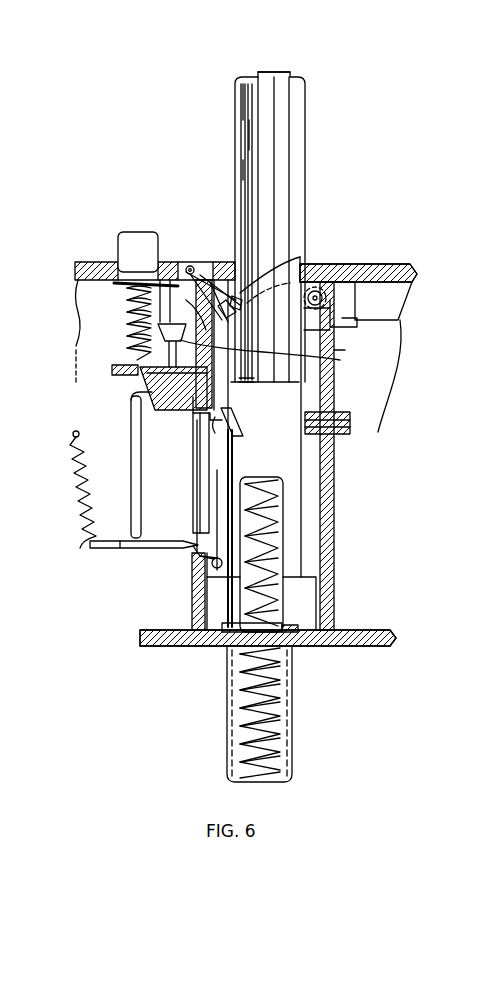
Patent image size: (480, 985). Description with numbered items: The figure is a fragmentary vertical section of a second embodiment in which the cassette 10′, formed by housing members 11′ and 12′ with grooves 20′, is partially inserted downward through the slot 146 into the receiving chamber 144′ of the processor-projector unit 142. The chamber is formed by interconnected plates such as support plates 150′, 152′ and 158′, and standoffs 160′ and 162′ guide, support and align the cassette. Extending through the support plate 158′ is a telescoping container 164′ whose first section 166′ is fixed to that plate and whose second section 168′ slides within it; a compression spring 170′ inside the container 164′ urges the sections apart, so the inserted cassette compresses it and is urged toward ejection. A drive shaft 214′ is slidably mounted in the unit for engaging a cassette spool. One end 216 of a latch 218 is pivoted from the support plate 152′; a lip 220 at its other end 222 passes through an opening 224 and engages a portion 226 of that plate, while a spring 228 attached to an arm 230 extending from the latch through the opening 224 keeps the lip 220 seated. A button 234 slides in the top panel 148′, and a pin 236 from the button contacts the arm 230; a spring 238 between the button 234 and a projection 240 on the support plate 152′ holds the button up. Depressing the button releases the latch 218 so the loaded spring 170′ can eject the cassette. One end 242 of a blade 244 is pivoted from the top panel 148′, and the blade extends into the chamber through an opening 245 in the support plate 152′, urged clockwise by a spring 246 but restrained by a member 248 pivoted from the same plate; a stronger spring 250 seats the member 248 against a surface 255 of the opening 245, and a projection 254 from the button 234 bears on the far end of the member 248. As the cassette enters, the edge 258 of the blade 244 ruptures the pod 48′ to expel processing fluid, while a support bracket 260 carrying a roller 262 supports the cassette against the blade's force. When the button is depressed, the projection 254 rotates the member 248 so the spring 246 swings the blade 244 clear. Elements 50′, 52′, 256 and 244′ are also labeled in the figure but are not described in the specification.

The cassette 10′ is at (300, 68).
The housing member 11′ is at (306, 118).
The housing member 12′ is at (236, 95).
The grooves 20′ is at (240, 105).
The rod sleeve 52′ is at (246, 130).
The rod guide 50′ is at (244, 167).
The button 234 is at (132, 232).
The surface 255 is at (160, 256).
The projection 254 is at (126, 291).
The spring 238 is at (132, 307).
The member 248 is at (140, 338).
The projection 240 is at (112, 372).
The slide block 256 is at (147, 373).
The spring 250 is at (148, 397).
The end of blade 242 is at (189, 264).
The opening 245 is at (200, 276).
The spring 246 is at (216, 290).
The blade 244 is at (236, 298).
The edge of blade 258 is at (244, 285).
The stop 244′ is at (300, 262).
The slot 146 is at (338, 268).
The top panel 148′ is at (410, 264).
The processor-projector unit 142 is at (392, 254).
The support bracket 260 is at (328, 297).
The roller 262 is at (345, 318).
The drive shaft 214′ is at (336, 390).
The pod 48′ is at (336, 358).
The support plate 150′ is at (340, 486).
The receiving chamber 144′ is at (352, 428).
The standoffs 160′ is at (300, 430).
The support plate 158′ is at (370, 640).
The telescoping container 164′ is at (294, 702).
The first section 166′ is at (232, 688).
The support plate 152′ is at (192, 612).
The second section 168′ is at (284, 606).
The standoffs 162′ is at (306, 586).
The compression spring 170′ is at (275, 562).
The opening 224 is at (197, 512).
The latch 218 is at (210, 458).
The portion of support member 226 is at (193, 405).
The other end of latch 222 is at (240, 404).
The lip 220 is at (194, 418).
The pin 236 is at (131, 452).
The spring 228 is at (142, 500).
The arm 230 is at (124, 549).
The end of latch 216 is at (195, 566).